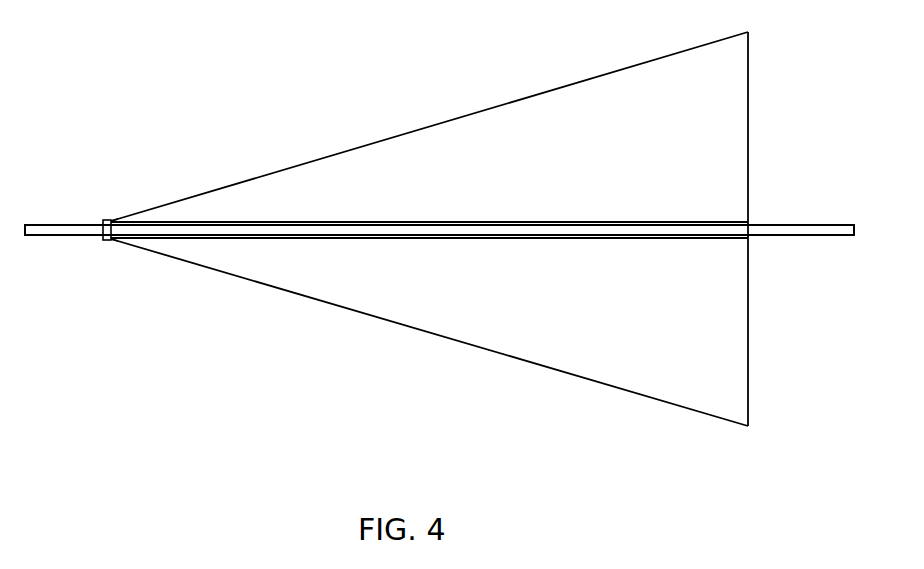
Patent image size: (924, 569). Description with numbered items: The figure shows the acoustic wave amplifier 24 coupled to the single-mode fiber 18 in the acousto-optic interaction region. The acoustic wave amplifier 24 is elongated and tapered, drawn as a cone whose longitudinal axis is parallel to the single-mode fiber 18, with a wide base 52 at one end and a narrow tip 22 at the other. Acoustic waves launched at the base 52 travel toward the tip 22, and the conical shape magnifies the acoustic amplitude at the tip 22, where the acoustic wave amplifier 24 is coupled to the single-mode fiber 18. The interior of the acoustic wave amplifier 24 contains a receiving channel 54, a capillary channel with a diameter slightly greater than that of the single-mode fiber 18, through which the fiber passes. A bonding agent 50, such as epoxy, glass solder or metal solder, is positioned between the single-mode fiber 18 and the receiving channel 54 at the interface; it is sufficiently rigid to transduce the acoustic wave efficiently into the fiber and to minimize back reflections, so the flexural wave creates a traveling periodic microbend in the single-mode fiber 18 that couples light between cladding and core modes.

The single-mode fiber 18 is at (812, 258).
The tip 22 is at (117, 199).
The acoustic wave amplifier 24 is at (428, 355).
The bonding agent 50 is at (101, 258).
The base 52 is at (725, 172).
The receiving channel 54 is at (605, 260).